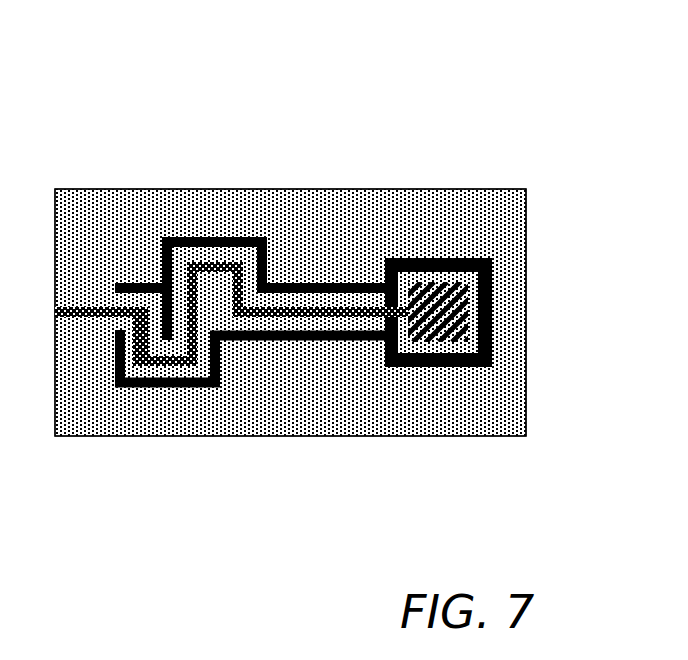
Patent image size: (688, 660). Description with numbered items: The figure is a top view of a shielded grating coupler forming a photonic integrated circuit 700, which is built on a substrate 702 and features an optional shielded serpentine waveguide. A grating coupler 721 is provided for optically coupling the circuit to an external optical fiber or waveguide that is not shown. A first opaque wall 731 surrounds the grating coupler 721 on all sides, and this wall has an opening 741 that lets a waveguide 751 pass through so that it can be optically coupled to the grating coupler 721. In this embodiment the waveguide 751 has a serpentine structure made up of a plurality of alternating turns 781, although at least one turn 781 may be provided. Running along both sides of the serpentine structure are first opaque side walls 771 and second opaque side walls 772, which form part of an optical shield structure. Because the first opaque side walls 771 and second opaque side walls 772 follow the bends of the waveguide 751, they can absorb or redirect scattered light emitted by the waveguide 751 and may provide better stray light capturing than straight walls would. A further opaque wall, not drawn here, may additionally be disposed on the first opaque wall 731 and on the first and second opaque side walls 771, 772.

The photonic integrated circuit 700 is at (545, 45).
The substrate 702 is at (160, 188).
The grating coupler 721 is at (450, 308).
The first opaque wall 731 is at (428, 258).
The opening 741 is at (379, 341).
The waveguide 751 is at (292, 283).
The first opaque side walls 771 is at (348, 283).
The second opaque side walls 772 is at (322, 341).
The turns 781 is at (147, 303).